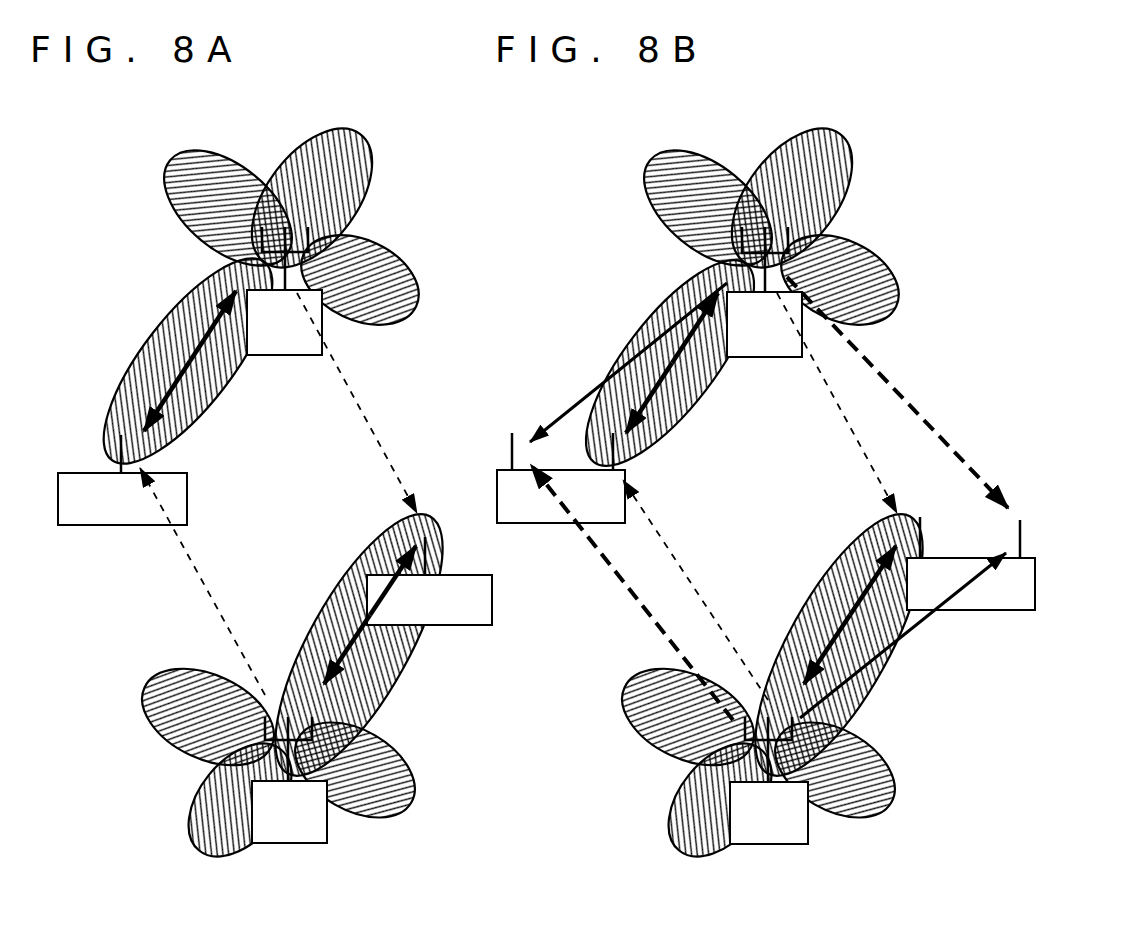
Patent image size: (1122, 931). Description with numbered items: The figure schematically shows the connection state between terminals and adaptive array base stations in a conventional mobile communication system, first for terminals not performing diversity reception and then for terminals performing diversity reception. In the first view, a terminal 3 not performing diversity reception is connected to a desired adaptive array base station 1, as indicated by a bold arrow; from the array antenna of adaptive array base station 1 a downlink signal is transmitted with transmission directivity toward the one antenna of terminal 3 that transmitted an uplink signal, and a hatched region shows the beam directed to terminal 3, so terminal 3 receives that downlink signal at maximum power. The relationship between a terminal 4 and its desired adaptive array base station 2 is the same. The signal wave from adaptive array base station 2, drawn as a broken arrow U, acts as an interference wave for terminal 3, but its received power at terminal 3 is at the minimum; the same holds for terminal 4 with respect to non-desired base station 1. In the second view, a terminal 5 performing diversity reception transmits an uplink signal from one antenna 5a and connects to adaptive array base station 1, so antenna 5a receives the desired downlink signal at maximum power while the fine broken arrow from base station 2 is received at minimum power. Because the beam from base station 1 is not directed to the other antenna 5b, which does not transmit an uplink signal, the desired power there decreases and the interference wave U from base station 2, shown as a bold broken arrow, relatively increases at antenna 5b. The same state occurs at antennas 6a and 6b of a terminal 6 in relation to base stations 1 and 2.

In FIG. 8A, the adaptive array base station 1 is at (322, 343).
In FIG. 8B, the adaptive array base station 1 is at (785, 357).
In FIG. 8A, the adaptive array base station 2 is at (318, 843).
In FIG. 8B, the adaptive array base station 2 is at (781, 845).
In FIG. 8A, the terminal 3 is at (187, 487).
In FIG. 8A, the terminal 4 is at (470, 625).
In FIG. 8B, the terminal 5 is at (625, 503).
In FIG. 8B, the antenna 5a is at (610, 447).
In FIG. 8B, the antenna 5b is at (510, 444).
In FIG. 8B, the terminal 6 is at (1000, 611).
In FIG. 8B, the antenna 6a is at (930, 544).
In FIG. 8B, the antenna 6b is at (1030, 525).
In FIG. 8A, the broken arrow U is at (372, 430).
In FIG. 8B, the broken arrow U is at (934, 430).